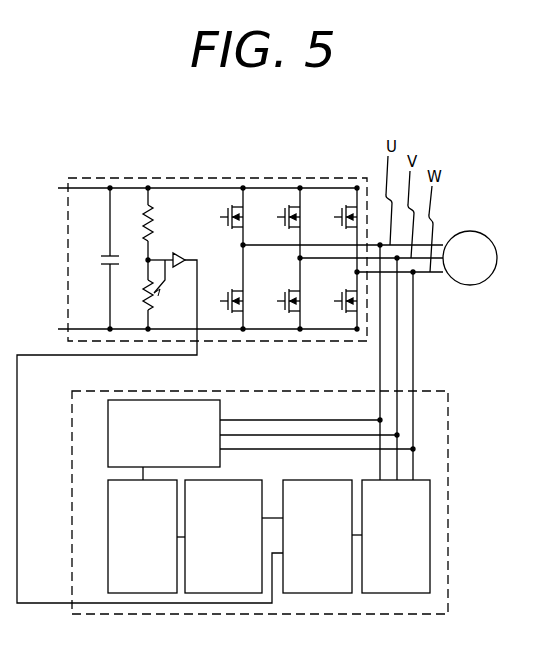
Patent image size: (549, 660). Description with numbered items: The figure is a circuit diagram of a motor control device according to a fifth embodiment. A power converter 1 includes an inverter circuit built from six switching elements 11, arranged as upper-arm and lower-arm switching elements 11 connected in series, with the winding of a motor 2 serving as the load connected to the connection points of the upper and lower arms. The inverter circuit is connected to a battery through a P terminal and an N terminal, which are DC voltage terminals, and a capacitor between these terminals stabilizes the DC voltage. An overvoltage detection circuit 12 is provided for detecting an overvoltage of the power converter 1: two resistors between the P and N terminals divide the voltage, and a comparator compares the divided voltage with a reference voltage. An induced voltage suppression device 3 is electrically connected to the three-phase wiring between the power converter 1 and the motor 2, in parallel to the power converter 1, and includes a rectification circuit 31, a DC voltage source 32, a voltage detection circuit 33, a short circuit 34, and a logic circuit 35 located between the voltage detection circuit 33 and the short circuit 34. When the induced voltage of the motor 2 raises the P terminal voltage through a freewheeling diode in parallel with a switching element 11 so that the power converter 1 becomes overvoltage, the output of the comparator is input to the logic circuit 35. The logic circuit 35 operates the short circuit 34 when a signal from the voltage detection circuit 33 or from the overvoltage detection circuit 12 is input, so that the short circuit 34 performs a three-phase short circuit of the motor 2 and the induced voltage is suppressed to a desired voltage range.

The power converter 1 is at (92, 178).
The motor 2 is at (468, 231).
The induced voltage suppression device 3 is at (440, 390).
The switching element 11 is at (235, 186).
The overvoltage detection circuit 12 is at (181, 215).
The rectification circuit 31 is at (108, 432).
The DC voltage source 32 is at (143, 594).
The voltage detection circuit 33 is at (218, 594).
The short circuit 34 is at (398, 594).
The logic circuit 35 is at (319, 594).